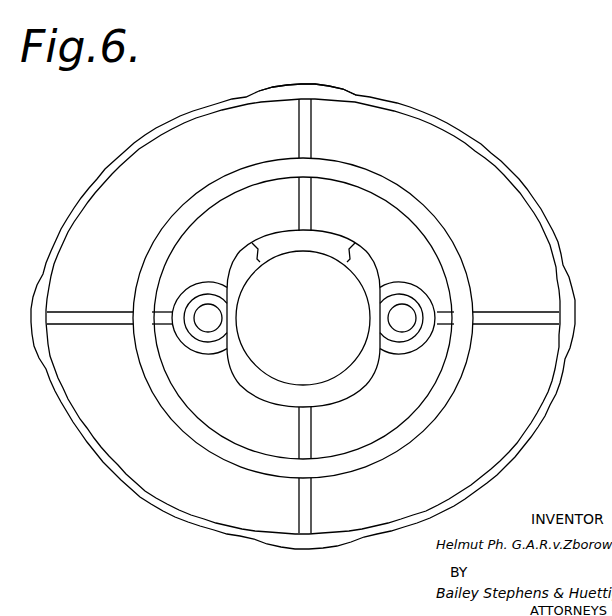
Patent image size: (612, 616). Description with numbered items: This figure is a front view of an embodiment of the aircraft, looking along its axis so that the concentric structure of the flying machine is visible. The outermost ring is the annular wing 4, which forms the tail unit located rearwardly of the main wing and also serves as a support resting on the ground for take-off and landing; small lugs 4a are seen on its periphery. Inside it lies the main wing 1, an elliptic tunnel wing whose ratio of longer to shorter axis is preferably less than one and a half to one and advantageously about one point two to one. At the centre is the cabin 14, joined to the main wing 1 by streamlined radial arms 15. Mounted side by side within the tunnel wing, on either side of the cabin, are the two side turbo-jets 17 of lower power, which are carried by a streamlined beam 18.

The main wing 1 is at (231, 182).
The annular wing 4 is at (97, 179).
The rim lug 4a is at (307, 89).
The cabin 14 is at (276, 236).
The streamlined radial arms 15 is at (312, 212).
The side turbo-jets 17 is at (198, 287).
The streamlined beam 18 is at (158, 316).